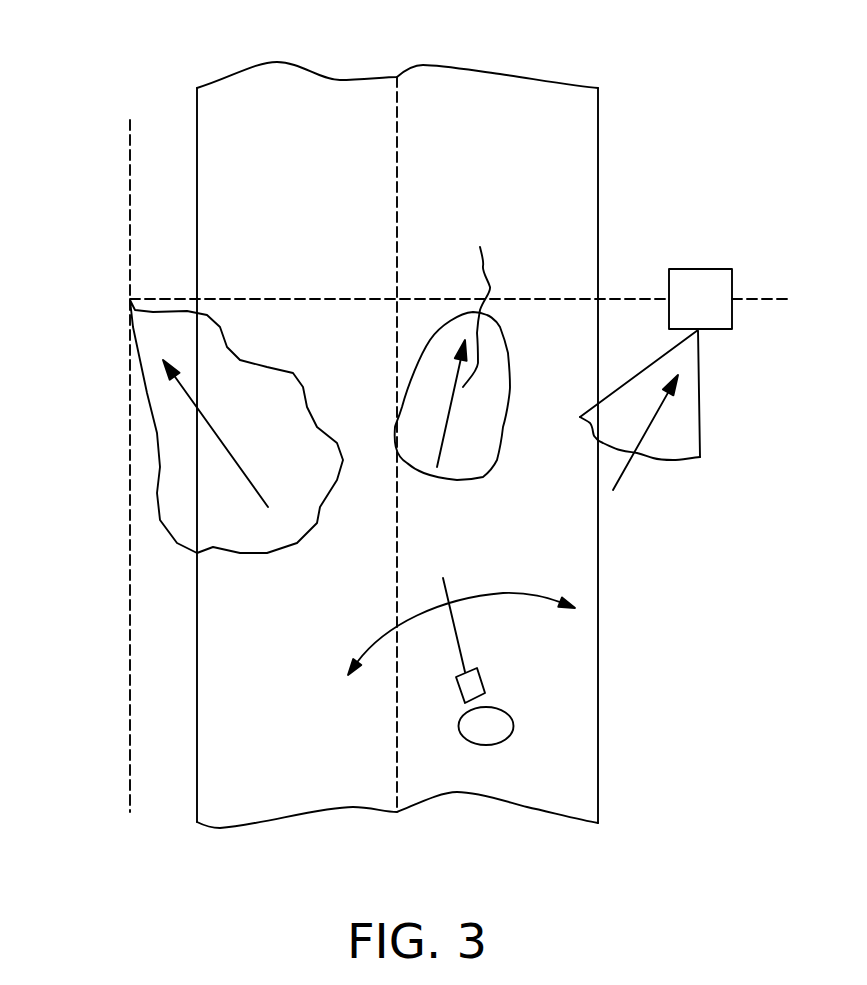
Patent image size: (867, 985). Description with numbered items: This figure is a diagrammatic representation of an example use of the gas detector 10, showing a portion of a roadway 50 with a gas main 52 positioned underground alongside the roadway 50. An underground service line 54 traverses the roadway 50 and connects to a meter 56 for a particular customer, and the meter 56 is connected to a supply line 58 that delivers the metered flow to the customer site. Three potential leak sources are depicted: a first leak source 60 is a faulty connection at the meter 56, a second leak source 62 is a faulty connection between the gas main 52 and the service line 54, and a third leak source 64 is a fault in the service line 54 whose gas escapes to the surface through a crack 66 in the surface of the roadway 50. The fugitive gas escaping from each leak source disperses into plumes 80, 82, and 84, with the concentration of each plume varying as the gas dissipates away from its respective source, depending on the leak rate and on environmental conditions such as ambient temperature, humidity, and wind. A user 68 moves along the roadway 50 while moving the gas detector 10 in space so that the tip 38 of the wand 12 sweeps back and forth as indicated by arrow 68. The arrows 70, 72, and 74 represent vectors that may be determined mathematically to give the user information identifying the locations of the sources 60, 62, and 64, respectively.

The gas detector 10 is at (494, 646).
The wand 12 is at (462, 663).
The tip 38 is at (443, 578).
The roadway 50 is at (470, 87).
The gas main 52 is at (127, 668).
The service line 54 is at (630, 298).
The meter 56 is at (688, 315).
The supply line 58 is at (760, 298).
The first leak source 60 is at (717, 349).
The second leak source 62 is at (117, 300).
The third leak source 64 is at (500, 296).
The crack 66 is at (485, 262).
The user 68 is at (513, 723).
The arrow 70 is at (623, 473).
The arrow 72 is at (247, 472).
The arrow 74 is at (453, 413).
The plume 80 is at (700, 443).
The plume 82 is at (150, 417).
The plume 84 is at (415, 380).